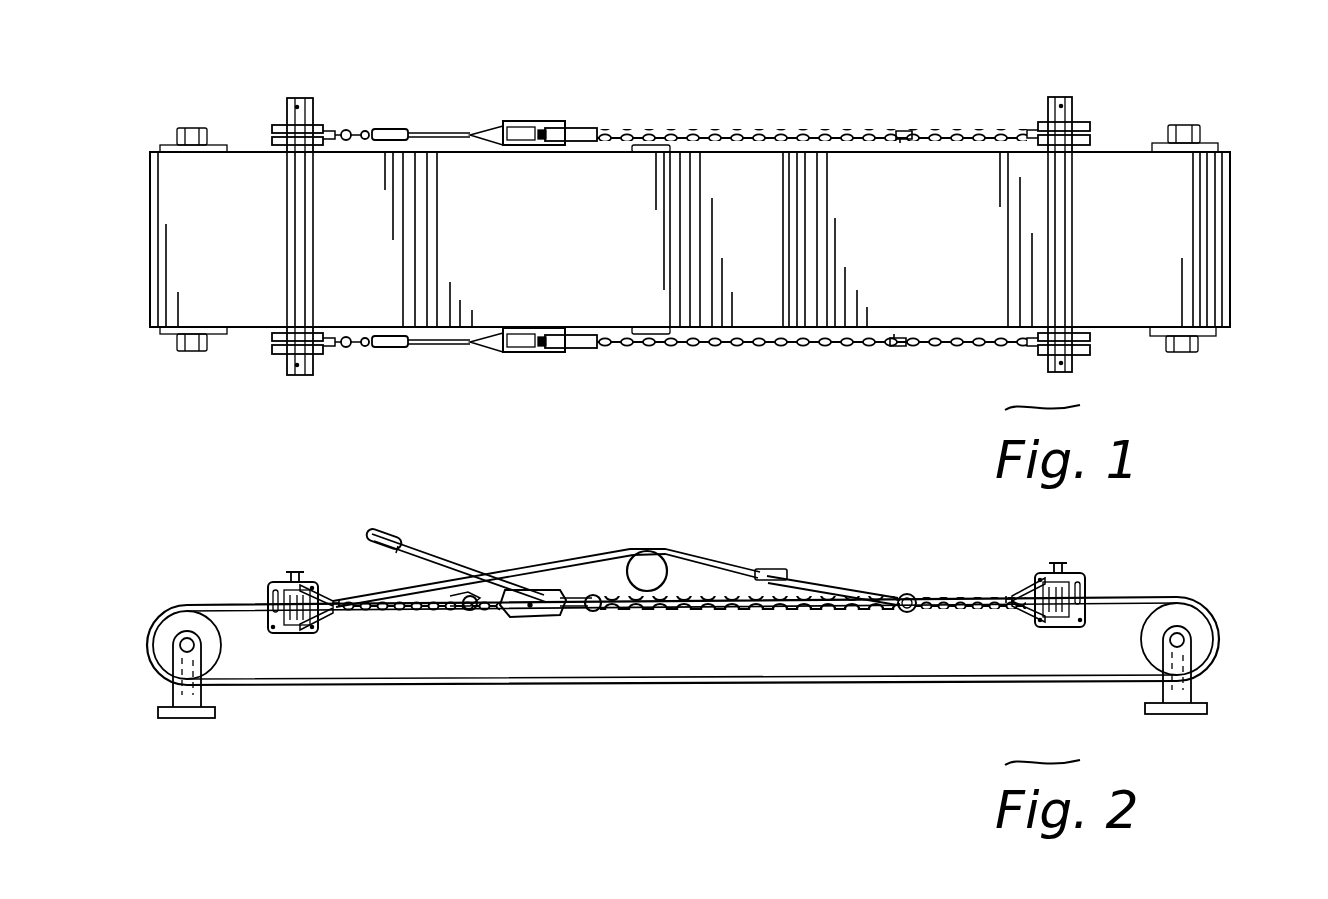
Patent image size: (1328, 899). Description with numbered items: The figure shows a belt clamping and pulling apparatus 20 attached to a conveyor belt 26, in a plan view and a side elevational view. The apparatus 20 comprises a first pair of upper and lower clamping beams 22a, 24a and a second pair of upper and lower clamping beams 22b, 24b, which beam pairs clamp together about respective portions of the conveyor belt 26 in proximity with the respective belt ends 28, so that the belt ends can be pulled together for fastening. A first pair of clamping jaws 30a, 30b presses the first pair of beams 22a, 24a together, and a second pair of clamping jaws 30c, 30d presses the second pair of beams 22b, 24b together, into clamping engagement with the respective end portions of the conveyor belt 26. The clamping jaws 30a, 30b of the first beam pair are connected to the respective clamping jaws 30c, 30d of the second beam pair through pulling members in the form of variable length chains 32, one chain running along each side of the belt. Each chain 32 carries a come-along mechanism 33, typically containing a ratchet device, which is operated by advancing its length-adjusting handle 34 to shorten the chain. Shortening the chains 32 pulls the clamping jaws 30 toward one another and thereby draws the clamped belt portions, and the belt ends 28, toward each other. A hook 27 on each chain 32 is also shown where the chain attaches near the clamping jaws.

In FIG. 1, the belt clamping and pulling apparatus 20 is at (1130, 12).
In FIG. 2, the belt clamping and pulling apparatus 20 is at (1218, 586).
In FIG. 2, the first upper clamping beam 22a is at (308, 585).
In FIG. 2, the second upper clamping beam 22b is at (1075, 570).
In FIG. 2, the first lower clamping beam 24a is at (320, 622).
In FIG. 2, the second lower clamping beam 24b is at (1048, 632).
In FIG. 1, the conveyor belt 26 is at (1170, 222).
In FIG. 2, the conveyor belt 26 is at (1130, 598).
In FIG. 1, the hook 27 is at (890, 145).
In FIG. 1, the belt ends 28 is at (783, 292).
In FIG. 2, the belt ends 28 is at (763, 576).
In FIG. 2, the clamping jaws 30 is at (264, 584).
In FIG. 1, the first clamping jaw 30a is at (270, 114).
In FIG. 1, the first clamping jaw 30b is at (264, 368).
In FIG. 1, the second clamping jaw 30c is at (1083, 117).
In FIG. 1, the second clamping jaw 30d is at (1098, 359).
In FIG. 1, the variable length chain 32 is at (768, 130).
In FIG. 1, the come-along mechanism 33 is at (542, 114).
In FIG. 2, the come-along mechanism 33 is at (541, 588).
In FIG. 2, the length-adjusting handle 34 is at (385, 545).